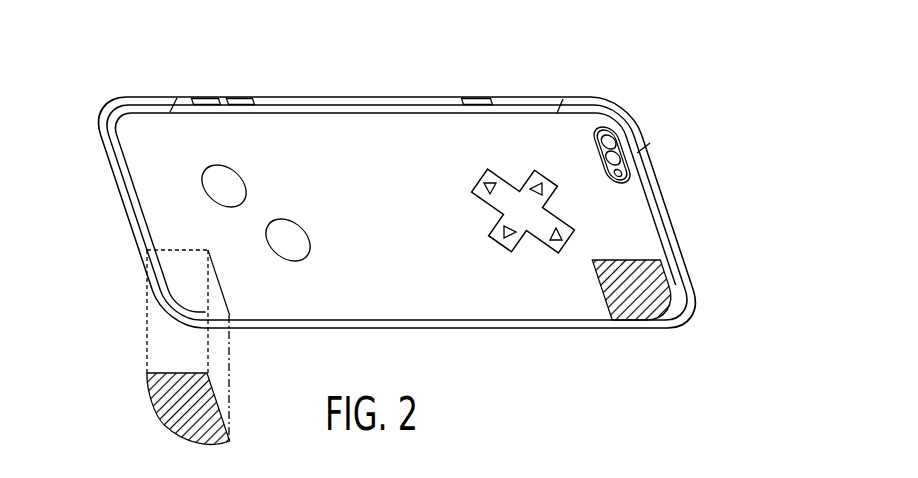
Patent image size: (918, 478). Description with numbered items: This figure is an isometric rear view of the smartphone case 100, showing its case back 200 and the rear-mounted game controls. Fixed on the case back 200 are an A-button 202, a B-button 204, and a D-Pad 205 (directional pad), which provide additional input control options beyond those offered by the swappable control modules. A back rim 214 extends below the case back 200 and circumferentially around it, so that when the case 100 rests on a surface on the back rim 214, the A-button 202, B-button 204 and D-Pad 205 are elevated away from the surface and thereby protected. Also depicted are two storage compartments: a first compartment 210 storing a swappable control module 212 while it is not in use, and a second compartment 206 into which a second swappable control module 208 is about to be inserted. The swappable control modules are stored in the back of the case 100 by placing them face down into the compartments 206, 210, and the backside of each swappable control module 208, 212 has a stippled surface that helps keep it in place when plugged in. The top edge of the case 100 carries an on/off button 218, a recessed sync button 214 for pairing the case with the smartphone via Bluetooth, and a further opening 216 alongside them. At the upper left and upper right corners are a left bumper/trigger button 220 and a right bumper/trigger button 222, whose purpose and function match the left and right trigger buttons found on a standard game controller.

The smartphone case 100 is at (628, 57).
The case back 200 is at (211, 155).
The A-button 202 is at (235, 176).
The B-button 204 is at (303, 227).
The D-Pad 205 is at (493, 252).
The second compartment 206 is at (173, 277).
The second swappable control module 208 is at (158, 417).
The first compartment 210 is at (628, 243).
The swappable control module 212 is at (600, 287).
The back rim 214 is at (127, 213).
The button opening 216 is at (240, 97).
The on/off button 218 is at (208, 97).
The left bumper/trigger button 220 is at (137, 97).
The right bumper/trigger button 222 is at (588, 97).